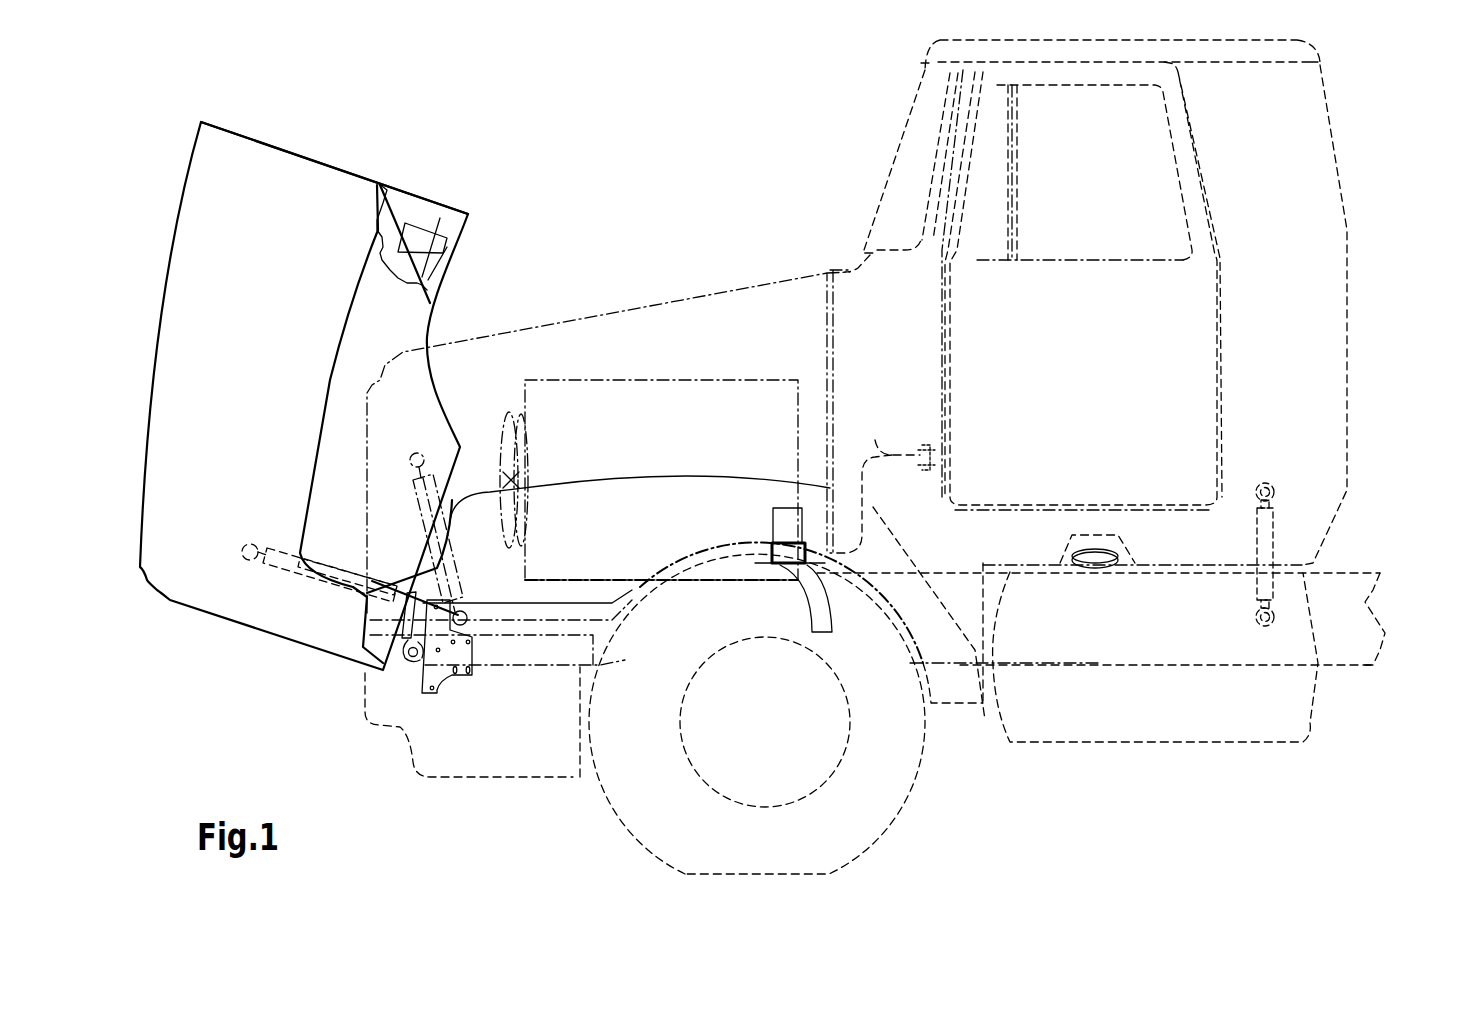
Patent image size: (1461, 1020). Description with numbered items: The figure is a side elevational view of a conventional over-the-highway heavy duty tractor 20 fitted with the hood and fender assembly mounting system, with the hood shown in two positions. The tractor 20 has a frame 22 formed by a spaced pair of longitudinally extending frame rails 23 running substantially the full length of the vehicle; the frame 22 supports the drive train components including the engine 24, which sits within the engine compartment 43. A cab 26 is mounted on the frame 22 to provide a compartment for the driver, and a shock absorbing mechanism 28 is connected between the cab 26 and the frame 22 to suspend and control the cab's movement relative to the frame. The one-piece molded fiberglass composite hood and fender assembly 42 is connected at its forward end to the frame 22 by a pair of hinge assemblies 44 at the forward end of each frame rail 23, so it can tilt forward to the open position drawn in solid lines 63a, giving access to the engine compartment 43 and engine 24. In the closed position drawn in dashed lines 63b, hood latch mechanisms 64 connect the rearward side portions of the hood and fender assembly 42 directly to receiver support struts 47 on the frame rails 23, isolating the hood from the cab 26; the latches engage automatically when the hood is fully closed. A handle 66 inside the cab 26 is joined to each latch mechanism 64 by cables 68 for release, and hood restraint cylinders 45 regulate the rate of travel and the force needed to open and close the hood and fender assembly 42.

The tractor 20 is at (1382, 240).
The frame 22 is at (1407, 592).
The frame rails 23 is at (1343, 650).
The engine 24 is at (583, 407).
The cab 26 is at (1350, 330).
The shock absorbing mechanism 28 is at (1262, 535).
The hood and fender assembly 42 is at (330, 172).
The engine compartment 43 is at (755, 303).
The hinge assemblies 44 is at (408, 655).
The hood restraint cylinders 45 is at (287, 568).
The receiver support struts 47 is at (823, 607).
The open position 63a is at (192, 170).
The closed position 63b is at (638, 296).
The hood latch mechanisms 64 is at (783, 510).
The handle 66 is at (938, 440).
The cables 68 is at (875, 440).